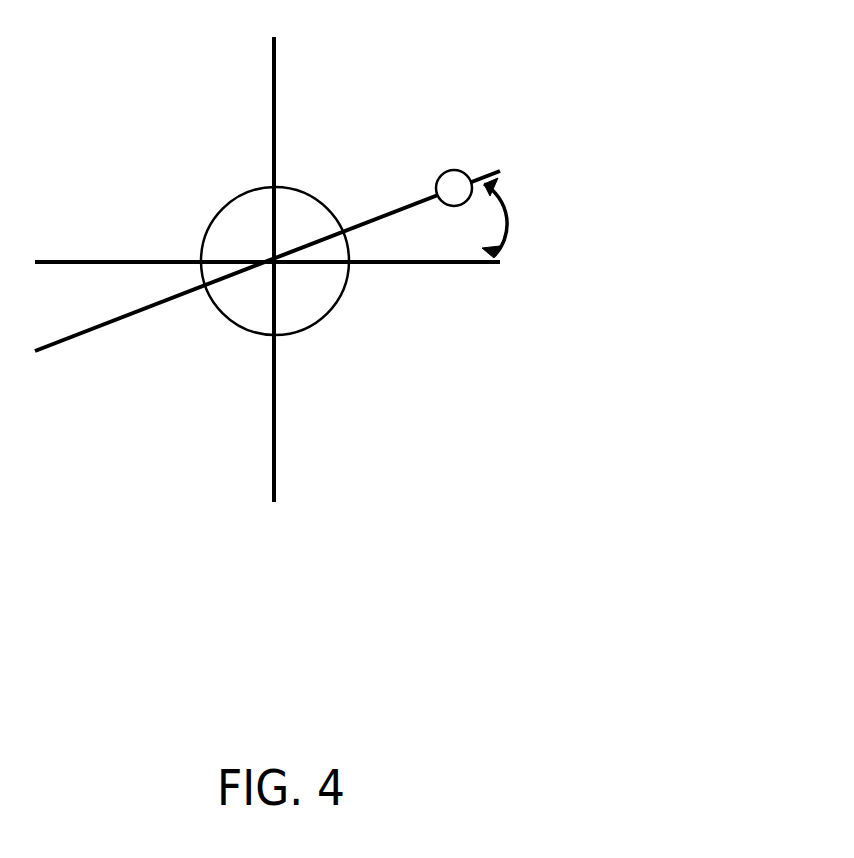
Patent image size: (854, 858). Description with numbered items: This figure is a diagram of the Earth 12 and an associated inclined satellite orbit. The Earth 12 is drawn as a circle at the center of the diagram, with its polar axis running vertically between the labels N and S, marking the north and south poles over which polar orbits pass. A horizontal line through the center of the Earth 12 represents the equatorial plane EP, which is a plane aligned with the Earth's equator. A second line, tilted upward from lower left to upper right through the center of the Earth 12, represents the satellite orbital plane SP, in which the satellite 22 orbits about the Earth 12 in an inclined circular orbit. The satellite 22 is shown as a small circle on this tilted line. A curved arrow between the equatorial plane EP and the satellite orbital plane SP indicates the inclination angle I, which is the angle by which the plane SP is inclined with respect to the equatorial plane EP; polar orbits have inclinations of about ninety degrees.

The Earth 12 is at (331, 312).
The satellite 22 is at (462, 172).
The inclination angle I is at (507, 218).
The north pole axis N is at (289, 146).
The south pole axis S is at (286, 382).
The equatorial plane EP is at (267, 242).
The satellite orbital plane SP is at (267, 277).